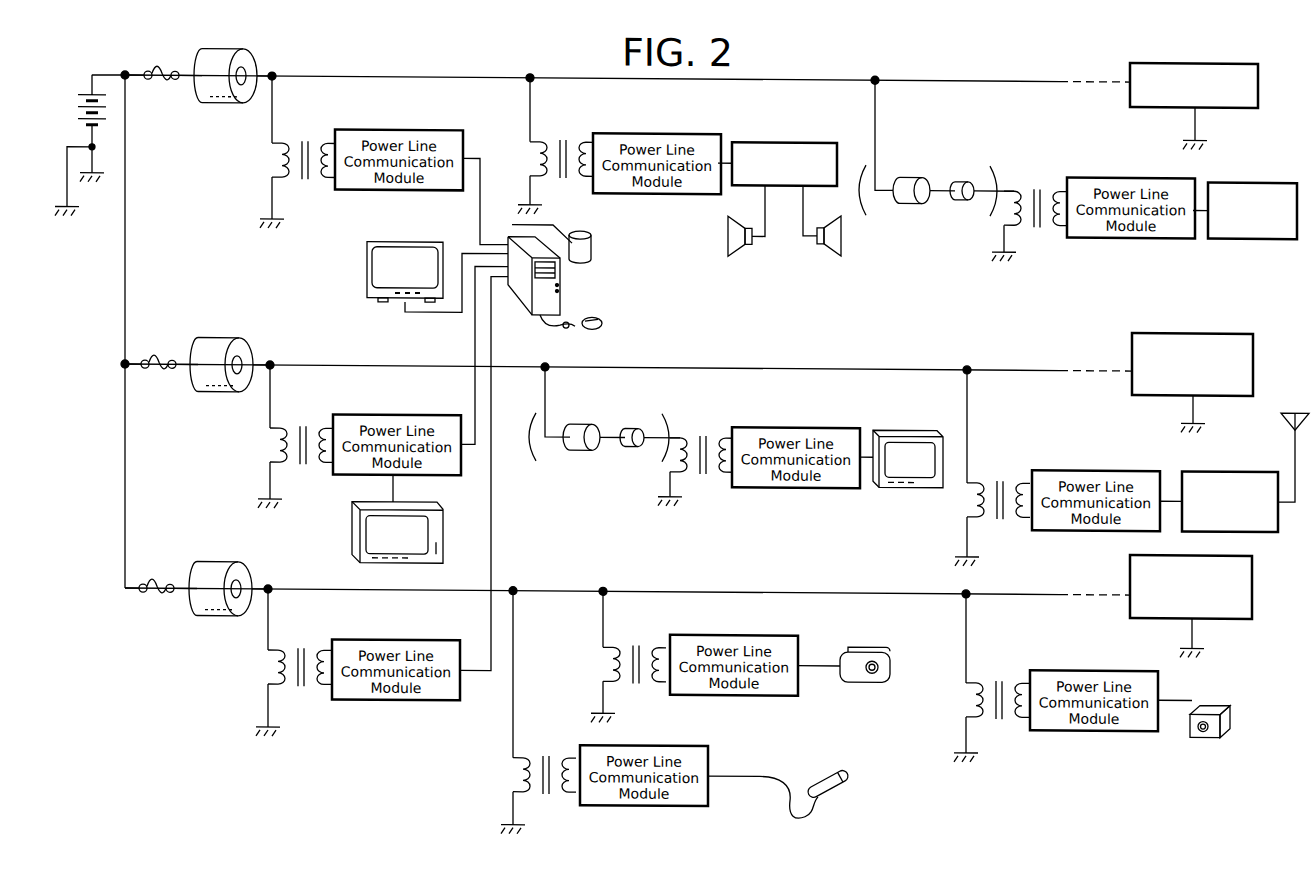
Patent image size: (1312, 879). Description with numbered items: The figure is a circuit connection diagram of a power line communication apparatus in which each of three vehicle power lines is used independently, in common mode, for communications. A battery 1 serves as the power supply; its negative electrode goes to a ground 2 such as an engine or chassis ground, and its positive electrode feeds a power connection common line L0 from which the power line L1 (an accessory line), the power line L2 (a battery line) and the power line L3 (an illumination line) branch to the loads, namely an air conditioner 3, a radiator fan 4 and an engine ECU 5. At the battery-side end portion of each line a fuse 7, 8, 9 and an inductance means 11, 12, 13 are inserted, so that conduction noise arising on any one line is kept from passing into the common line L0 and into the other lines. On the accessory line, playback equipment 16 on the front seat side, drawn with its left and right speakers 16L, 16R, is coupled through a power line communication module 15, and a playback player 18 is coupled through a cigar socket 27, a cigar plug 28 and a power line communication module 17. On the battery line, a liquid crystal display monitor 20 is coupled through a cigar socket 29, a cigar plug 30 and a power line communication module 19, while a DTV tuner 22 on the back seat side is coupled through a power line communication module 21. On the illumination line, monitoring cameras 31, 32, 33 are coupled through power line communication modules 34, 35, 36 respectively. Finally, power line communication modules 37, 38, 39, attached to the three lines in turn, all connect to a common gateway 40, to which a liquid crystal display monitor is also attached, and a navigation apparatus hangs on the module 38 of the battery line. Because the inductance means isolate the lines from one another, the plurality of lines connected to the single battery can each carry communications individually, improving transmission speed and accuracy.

The battery 1 is at (65, 110).
The ground 2 is at (93, 192).
The air conditioner 3 is at (1259, 78).
The radiator fan 4 is at (1228, 325).
The engine ECU 5 is at (1255, 566).
The fuse 7 is at (164, 87).
The fuse 8 is at (168, 352).
The fuse 9 is at (166, 575).
The inductance means 11 is at (222, 104).
The inductance means 12 is at (233, 337).
The inductance means 13 is at (232, 561).
The power line communication module 15 is at (690, 127).
The playback equipment 16 is at (806, 136).
The left speaker 16L is at (738, 255).
The right speaker 16R is at (832, 254).
The power line communication module 17 is at (1132, 170).
The playback player 18 is at (1272, 170).
The power line communication module 19 is at (828, 419).
The liquid crystal display monitor 20 is at (920, 420).
The power line communication module 21 is at (1124, 463).
The digital television tuner 22 is at (1254, 463).
The cigar socket 27 is at (912, 169).
The cigar plug 28 is at (963, 175).
The cigar socket 29 is at (582, 418).
The cigar plug 30 is at (634, 422).
The monitoring camera 31 is at (870, 642).
The monitoring camera 32 is at (824, 766).
The monitoring camera 33 is at (1236, 706).
The power line communication module 34 is at (763, 630).
The power line communication module 35 is at (676, 740).
The power line communication module 36 is at (1124, 663).
The power line communication module 37 is at (428, 128).
The power line communication module 38 is at (428, 412).
The power line communication module 39 is at (428, 635).
The gateway 40 is at (538, 316).
The power connection common line L0 is at (116, 426).
The power line L1 is at (319, 74).
The power line L2 is at (316, 362).
The power line L3 is at (316, 586).